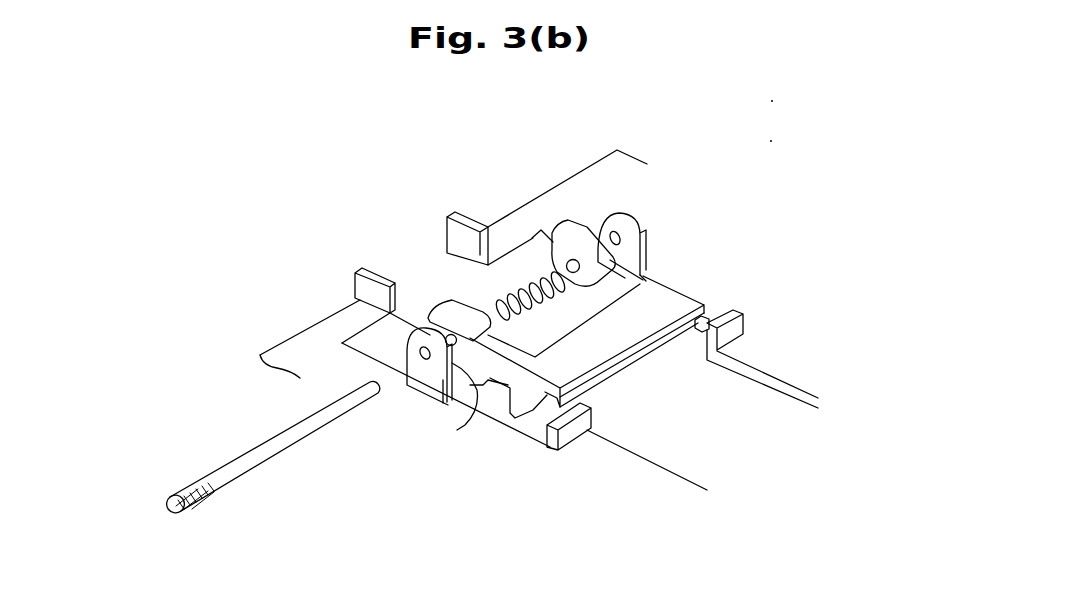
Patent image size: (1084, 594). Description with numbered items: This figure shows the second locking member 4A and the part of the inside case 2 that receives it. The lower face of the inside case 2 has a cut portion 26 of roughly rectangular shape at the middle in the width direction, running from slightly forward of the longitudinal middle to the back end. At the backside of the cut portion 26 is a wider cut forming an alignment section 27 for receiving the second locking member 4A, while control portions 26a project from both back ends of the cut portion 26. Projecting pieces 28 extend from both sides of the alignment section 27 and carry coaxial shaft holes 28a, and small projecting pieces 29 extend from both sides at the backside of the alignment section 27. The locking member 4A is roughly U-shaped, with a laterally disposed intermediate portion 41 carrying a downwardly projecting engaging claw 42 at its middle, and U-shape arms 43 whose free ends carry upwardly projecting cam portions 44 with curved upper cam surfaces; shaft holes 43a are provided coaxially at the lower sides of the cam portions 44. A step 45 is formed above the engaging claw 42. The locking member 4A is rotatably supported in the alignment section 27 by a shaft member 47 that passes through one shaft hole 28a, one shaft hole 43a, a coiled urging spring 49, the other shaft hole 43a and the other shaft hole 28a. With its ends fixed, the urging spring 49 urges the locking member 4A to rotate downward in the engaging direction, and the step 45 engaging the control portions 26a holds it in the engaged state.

The inside case 2 is at (631, 146).
The small projecting pieces 29 is at (452, 231).
The coiled urging spring 49 is at (533, 273).
The cam portions 44 is at (577, 232).
The projecting pieces 28 is at (643, 242).
The shaft holes 28a is at (618, 215).
The shaft holes 43a is at (643, 278).
The U-shape arms 43 is at (630, 282).
The intermediate portion 41 is at (585, 357).
The step 45 is at (643, 357).
The engaging claw 42 is at (527, 417).
The second locking member 4A is at (603, 402).
The alignment section 27 is at (712, 310).
The control portions 26a is at (745, 323).
The cut portion 26 is at (778, 395).
The shaft member 47 is at (260, 453).